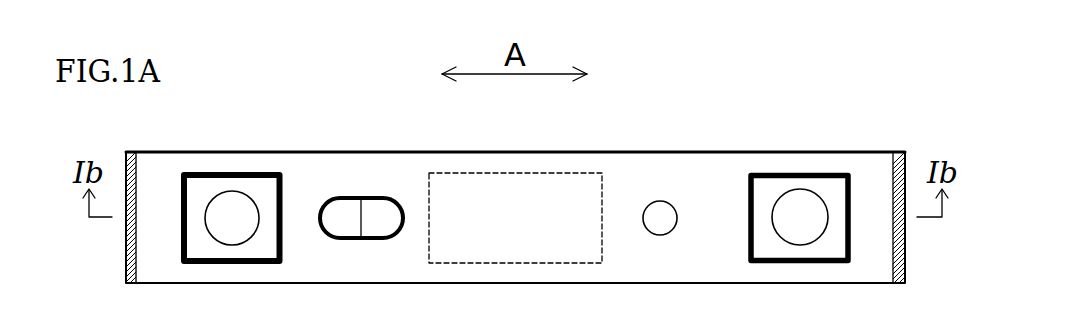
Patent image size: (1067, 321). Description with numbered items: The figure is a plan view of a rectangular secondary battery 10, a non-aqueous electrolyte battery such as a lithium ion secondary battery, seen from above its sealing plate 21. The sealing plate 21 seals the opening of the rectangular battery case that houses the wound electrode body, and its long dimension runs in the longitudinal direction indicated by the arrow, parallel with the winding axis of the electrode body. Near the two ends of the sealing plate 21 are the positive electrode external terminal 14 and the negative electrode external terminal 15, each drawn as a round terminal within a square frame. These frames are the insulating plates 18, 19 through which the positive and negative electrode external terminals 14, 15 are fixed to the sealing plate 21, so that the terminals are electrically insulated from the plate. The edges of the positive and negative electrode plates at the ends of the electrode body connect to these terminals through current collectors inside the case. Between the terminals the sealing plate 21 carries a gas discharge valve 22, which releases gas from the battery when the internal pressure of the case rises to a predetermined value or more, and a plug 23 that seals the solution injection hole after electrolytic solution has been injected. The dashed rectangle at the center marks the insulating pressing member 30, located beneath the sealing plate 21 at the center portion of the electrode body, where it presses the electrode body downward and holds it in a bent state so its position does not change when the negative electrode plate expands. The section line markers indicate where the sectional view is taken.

The rectangular secondary battery 10 is at (1018, 158).
The sealing plate 21 is at (715, 150).
The insulating plate 18 is at (207, 172).
The positive electrode external terminal 14 is at (238, 191).
The gas discharge valve 22 is at (368, 196).
The pressing member 30 is at (525, 173).
The plug 23 is at (662, 201).
The insulating plate 19 is at (827, 173).
The negative electrode external terminal 15 is at (798, 189).